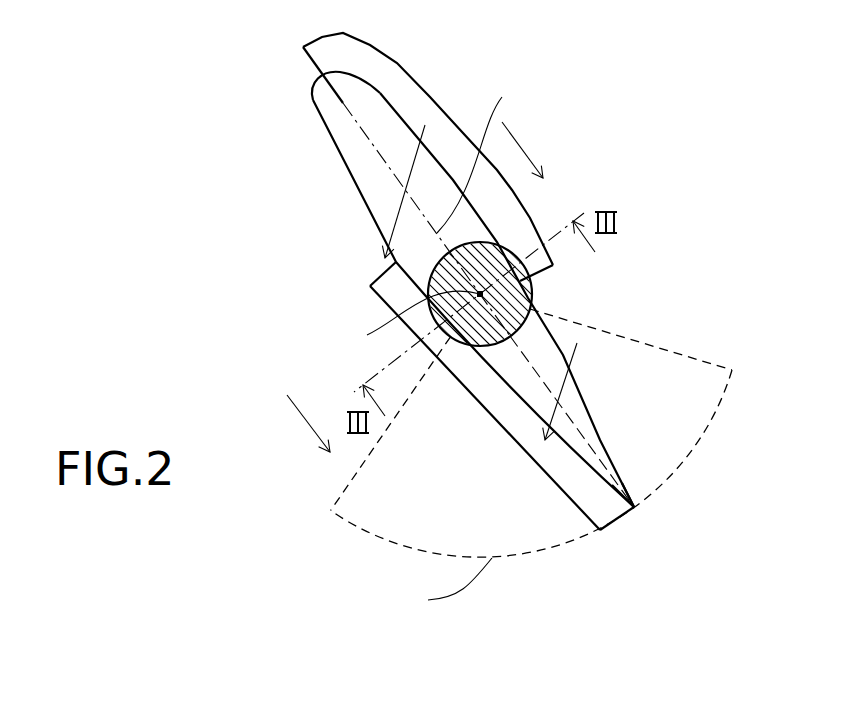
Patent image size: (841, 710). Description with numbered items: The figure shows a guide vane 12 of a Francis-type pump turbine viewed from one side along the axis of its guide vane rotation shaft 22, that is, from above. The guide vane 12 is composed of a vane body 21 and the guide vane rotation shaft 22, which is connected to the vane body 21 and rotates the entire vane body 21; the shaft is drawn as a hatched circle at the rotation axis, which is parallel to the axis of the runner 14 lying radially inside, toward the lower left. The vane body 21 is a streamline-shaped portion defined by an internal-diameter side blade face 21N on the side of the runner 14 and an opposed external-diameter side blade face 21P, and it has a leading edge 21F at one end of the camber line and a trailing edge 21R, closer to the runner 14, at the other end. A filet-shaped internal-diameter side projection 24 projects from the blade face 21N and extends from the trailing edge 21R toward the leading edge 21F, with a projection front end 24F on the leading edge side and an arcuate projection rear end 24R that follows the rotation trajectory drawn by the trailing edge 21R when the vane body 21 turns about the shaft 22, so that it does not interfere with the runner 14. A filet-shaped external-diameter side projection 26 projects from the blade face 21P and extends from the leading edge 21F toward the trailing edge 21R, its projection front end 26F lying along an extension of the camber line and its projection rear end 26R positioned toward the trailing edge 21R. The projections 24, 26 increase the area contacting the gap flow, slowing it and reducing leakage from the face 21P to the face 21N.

The guide vane 12 is at (577, 172).
The runner 14 is at (290, 553).
The vane body 21 is at (352, 189).
The leading edge 21F is at (320, 75).
The internal-diameter side blade face 21N is at (377, 226).
The external-diameter side blade face 21P is at (553, 337).
The trailing edge 21R is at (636, 508).
The guide vane rotation shaft 22 is at (530, 326).
The internal-diameter side projection 24 is at (478, 402).
The projection front end 24F is at (370, 284).
The projection rear end 24R is at (620, 518).
The external-diameter side projection 26 is at (452, 114).
The projection front end 26F is at (309, 56).
The projection rear end 26R is at (537, 268).